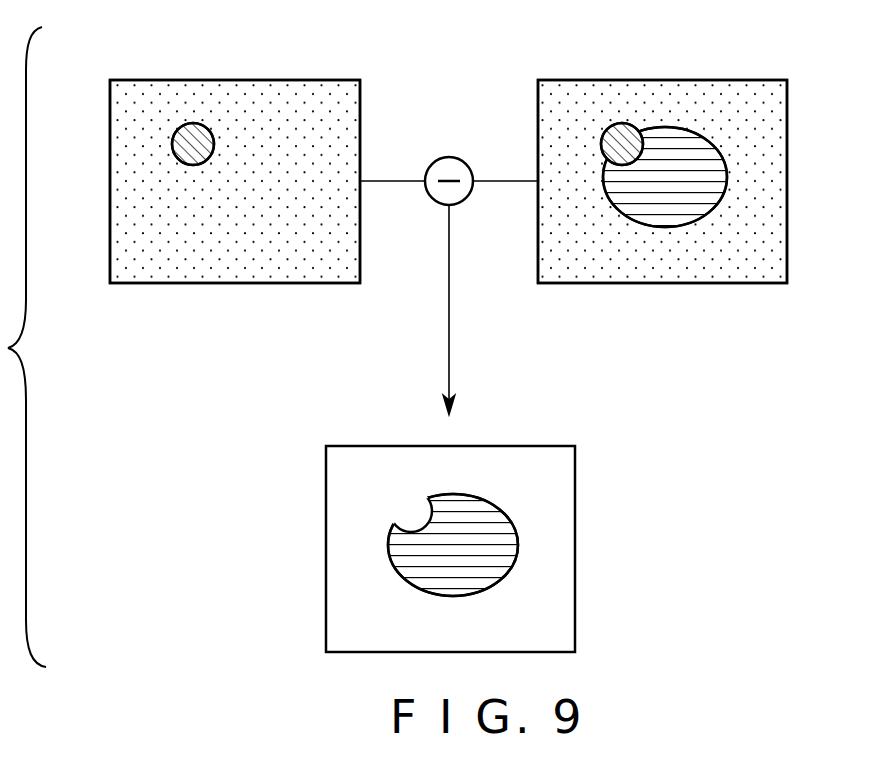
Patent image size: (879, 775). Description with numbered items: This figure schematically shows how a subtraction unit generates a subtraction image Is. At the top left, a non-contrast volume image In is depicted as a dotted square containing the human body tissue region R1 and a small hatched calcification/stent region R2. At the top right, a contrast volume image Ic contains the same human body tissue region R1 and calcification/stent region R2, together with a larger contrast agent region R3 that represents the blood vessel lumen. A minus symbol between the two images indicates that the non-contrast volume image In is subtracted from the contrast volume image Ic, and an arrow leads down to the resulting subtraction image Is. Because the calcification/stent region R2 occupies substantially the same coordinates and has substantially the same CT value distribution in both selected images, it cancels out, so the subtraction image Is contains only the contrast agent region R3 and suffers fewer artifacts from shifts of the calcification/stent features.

The human body tissue region R1 is at (133, 231).
The calcification/stent region R2 is at (188, 148).
The contrast agent region R3 is at (728, 177).
The non-contrast volume image In is at (323, 80).
The contrast volume image Ic is at (750, 80).
The subtraction image Is is at (548, 446).